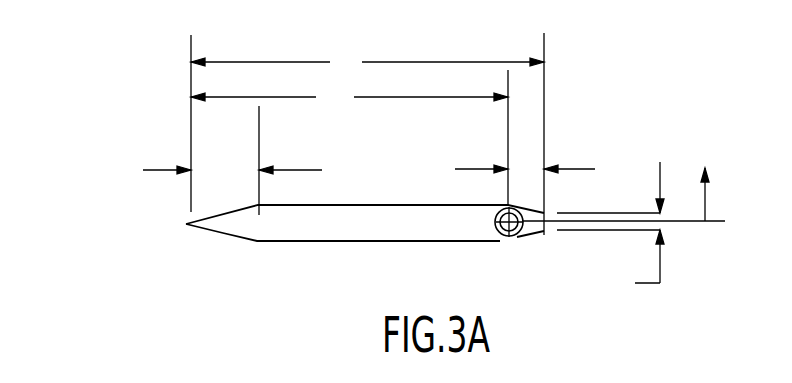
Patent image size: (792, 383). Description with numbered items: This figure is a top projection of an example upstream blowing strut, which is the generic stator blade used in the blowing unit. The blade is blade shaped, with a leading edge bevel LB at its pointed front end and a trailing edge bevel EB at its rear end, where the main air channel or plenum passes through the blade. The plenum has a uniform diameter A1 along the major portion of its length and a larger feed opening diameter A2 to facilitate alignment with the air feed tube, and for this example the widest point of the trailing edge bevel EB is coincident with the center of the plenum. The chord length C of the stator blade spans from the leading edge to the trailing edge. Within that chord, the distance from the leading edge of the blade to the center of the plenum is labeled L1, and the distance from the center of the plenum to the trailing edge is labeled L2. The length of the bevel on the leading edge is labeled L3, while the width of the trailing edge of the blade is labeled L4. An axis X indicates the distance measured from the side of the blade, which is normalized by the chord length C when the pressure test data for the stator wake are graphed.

The chord length C is at (367, 63).
The distance from leading edge to plenum center L1 is at (349, 97).
The distance from plenum center to trailing edge L2 is at (535, 159).
The leading edge bevel length L3 is at (217, 153).
The trailing edge width L4 is at (610, 229).
The leading edge bevel LB is at (222, 232).
The plenum uniform diameter A1 is at (515, 237).
The feed opening diameter A2 is at (499, 239).
The trailing edge bevel EB is at (538, 234).
The distance from side of blade X is at (624, 186).